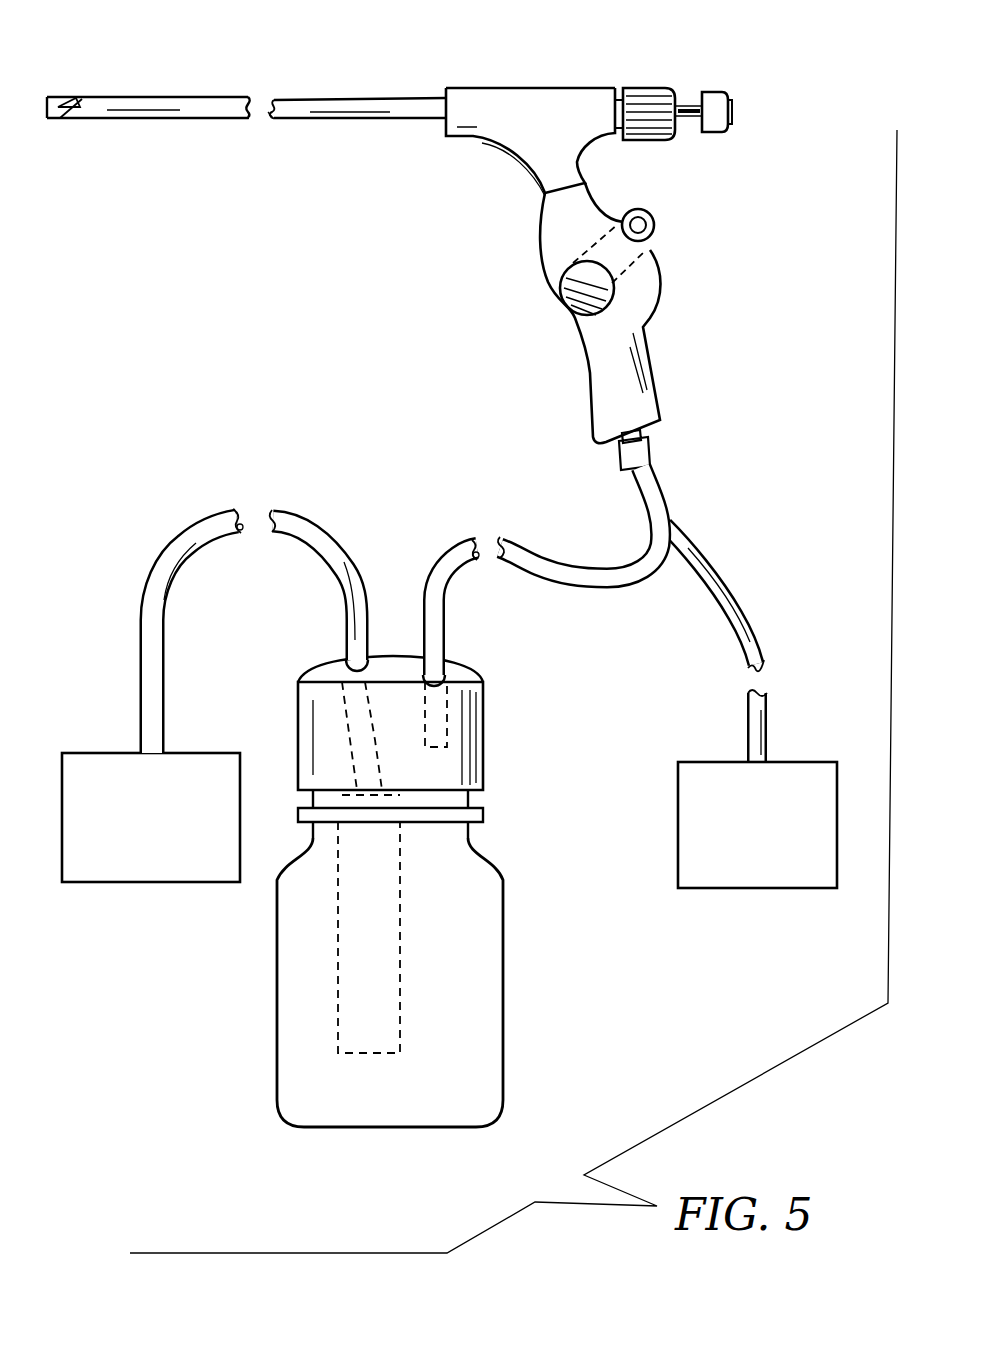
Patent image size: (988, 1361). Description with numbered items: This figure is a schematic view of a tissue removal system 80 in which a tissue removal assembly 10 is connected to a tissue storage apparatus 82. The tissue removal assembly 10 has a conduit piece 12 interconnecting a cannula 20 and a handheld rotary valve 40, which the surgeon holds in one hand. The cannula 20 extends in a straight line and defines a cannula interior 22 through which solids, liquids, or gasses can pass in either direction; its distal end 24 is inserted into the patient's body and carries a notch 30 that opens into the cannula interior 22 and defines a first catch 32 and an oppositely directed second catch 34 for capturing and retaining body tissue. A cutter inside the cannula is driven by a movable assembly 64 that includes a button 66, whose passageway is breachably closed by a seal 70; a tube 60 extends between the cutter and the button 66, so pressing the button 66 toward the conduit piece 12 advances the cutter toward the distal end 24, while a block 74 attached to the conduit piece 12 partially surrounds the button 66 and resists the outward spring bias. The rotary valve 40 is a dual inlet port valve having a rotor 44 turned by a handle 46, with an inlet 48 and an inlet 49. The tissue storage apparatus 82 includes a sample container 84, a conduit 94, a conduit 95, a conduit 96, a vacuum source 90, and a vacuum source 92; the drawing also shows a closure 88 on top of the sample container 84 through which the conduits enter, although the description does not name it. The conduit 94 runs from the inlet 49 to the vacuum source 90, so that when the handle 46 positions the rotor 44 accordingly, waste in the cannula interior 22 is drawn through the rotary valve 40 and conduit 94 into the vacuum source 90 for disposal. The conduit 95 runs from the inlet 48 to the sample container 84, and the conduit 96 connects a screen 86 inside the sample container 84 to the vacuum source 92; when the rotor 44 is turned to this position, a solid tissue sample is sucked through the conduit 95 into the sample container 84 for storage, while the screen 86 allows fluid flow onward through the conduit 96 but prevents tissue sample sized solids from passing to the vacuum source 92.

The tissue removal assembly 10 is at (530, 98).
The conduit piece 12 is at (568, 87).
The cannula 20 is at (341, 134).
The cannula interior 22 is at (270, 118).
The distal end 24 is at (44, 86).
The notch 30 is at (136, 78).
The first catch 32 is at (64, 103).
The second catch 34 is at (67, 110).
The handheld rotary valve 40 is at (623, 313).
The rotor 44 is at (578, 307).
The handle 46 is at (653, 236).
The inlet 48 is at (699, 440).
The inlet 49 is at (659, 443).
The tube 60 is at (272, 100).
The movable assembly 64 is at (765, 116).
The button 66 is at (717, 147).
The seal 70 is at (730, 113).
The block 74 is at (658, 83).
The tissue removal system 80 is at (780, 95).
The tissue storage apparatus 82 is at (611, 587).
The sample container 84 is at (514, 940).
The screen 86 is at (335, 970).
The bottle cap 88 is at (491, 737).
The vacuum source 90 is at (748, 868).
The vacuum source 92 is at (183, 866).
The conduit 94 is at (758, 655).
The conduit 95 is at (597, 578).
The conduit 96 is at (186, 543).